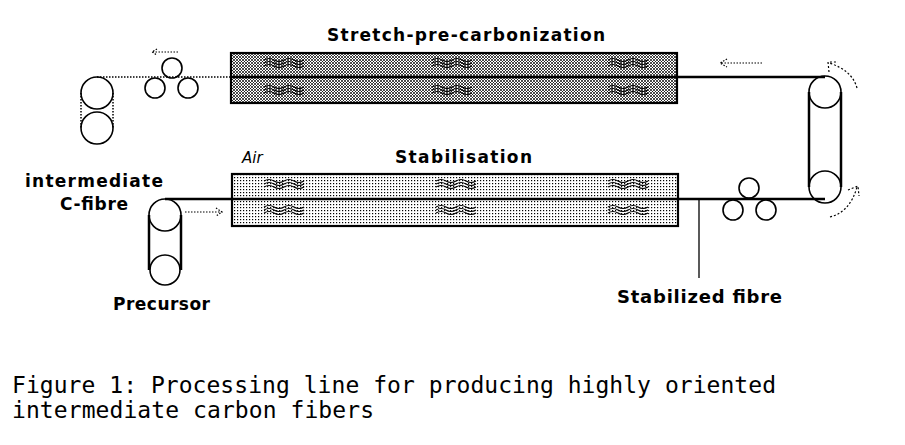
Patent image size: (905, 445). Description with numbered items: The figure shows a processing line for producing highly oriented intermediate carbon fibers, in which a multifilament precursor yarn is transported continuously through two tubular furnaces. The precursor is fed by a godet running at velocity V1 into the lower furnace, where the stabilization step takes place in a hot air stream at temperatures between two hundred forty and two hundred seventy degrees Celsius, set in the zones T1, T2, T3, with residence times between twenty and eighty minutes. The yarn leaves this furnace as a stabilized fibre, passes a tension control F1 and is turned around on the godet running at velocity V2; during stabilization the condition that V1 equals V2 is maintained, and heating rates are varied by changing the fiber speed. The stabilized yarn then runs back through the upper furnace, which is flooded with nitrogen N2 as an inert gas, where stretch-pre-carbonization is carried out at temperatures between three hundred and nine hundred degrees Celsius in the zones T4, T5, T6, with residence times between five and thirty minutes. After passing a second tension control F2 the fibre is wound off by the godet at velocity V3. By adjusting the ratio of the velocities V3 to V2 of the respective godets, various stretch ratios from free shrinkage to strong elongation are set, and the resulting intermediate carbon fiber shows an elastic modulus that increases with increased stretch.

The godet velocity V1 is at (165, 242).
The godet velocity V2 is at (825, 139).
The godet velocity V3 is at (97, 110).
The stabilization temperature T1 is at (284, 218).
The stabilization temperature T2 is at (456, 218).
The stabilization temperature T3 is at (628, 218).
The stretch-pre-carbonization temperature T4 is at (285, 95).
The stretch-pre-carbonization temperature T5 is at (452, 95).
The stretch-pre-carbonization temperature T6 is at (628, 95).
The tension control F1 is at (749, 227).
The tension control F2 is at (171, 103).
The nitrogen N2 is at (245, 41).